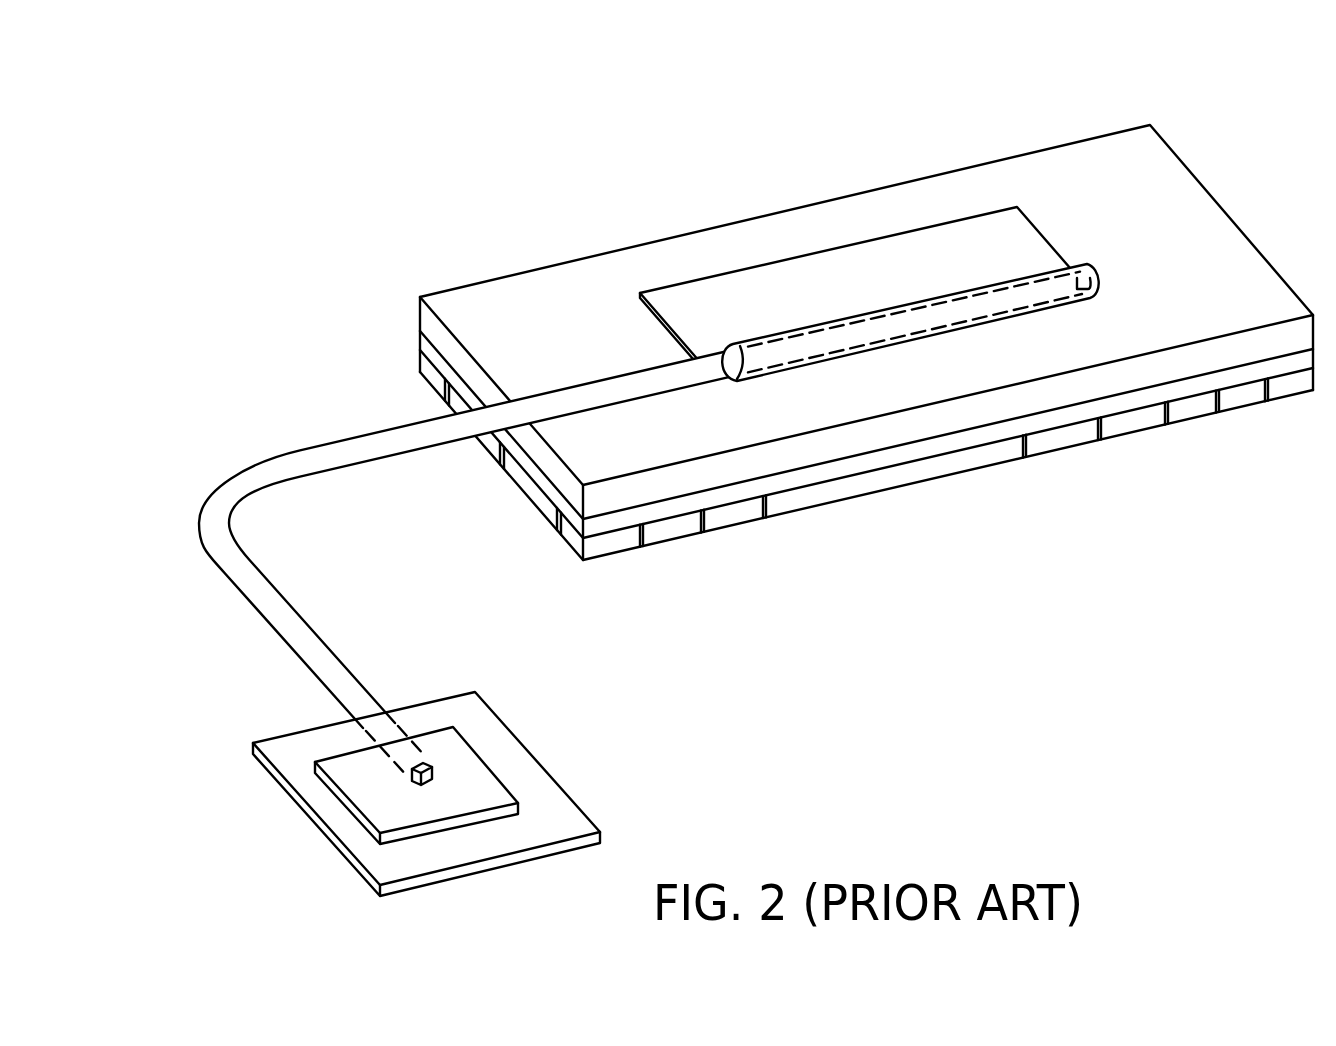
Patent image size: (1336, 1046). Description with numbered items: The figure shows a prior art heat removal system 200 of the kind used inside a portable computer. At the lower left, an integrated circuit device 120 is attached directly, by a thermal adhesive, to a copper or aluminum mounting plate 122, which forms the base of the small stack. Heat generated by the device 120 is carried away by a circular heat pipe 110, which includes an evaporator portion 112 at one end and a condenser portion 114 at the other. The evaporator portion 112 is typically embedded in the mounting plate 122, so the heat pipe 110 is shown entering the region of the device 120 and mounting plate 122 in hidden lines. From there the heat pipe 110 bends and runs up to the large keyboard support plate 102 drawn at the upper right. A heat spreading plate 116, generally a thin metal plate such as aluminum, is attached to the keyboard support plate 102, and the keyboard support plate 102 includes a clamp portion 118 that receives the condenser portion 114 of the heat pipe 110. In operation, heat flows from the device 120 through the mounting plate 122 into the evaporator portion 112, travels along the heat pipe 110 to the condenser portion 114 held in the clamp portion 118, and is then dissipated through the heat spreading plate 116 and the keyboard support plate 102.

The heat removal system 200 is at (771, 141).
The keyboard support plate 102 is at (1040, 170).
The heat pipe 110 is at (290, 471).
The evaporator portion 112 is at (407, 757).
The condenser portion 114 is at (920, 323).
The heat spreading plate 116 is at (735, 312).
The clamp portion 118 is at (973, 288).
The integrated circuit device 120 is at (470, 787).
The mounting plate 122 is at (566, 830).